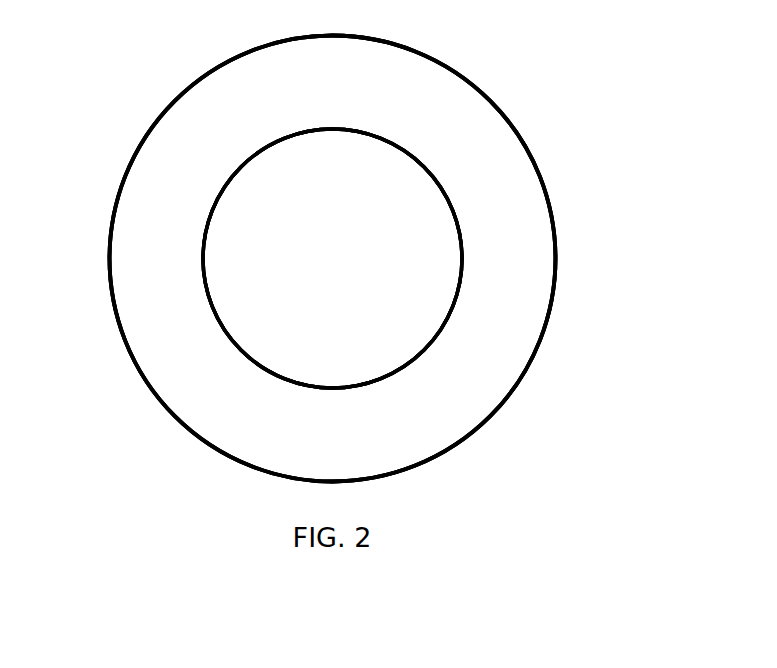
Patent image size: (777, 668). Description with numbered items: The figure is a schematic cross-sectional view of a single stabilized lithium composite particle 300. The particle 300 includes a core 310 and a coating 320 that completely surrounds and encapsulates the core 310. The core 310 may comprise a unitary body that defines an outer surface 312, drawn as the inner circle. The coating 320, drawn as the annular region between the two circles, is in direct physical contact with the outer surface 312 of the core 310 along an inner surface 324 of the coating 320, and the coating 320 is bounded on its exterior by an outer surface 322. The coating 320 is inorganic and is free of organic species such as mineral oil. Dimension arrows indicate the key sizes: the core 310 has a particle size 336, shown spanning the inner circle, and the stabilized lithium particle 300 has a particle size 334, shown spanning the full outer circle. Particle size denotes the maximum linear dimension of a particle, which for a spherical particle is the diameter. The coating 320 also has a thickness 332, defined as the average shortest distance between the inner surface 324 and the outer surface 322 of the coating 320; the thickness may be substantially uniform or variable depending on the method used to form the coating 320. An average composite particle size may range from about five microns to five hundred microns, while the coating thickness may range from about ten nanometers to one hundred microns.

The stabilized lithium composite particle 300 is at (590, 148).
The core 310 is at (332, 258).
The outer surface 312 is at (278, 373).
The coating 320 is at (333, 259).
The outer surface 322 is at (513, 392).
The inner surface 324 is at (448, 210).
The thickness 332 is at (203, 259).
The particle size 334 is at (62, 37).
The particle size 336 is at (462, 259).